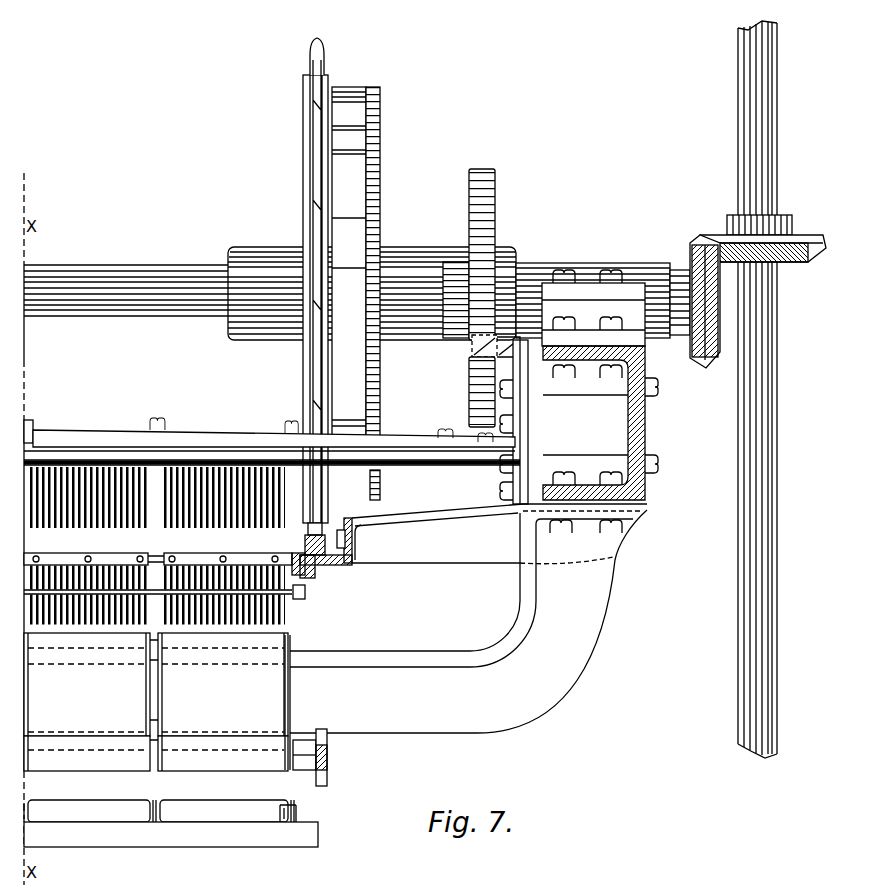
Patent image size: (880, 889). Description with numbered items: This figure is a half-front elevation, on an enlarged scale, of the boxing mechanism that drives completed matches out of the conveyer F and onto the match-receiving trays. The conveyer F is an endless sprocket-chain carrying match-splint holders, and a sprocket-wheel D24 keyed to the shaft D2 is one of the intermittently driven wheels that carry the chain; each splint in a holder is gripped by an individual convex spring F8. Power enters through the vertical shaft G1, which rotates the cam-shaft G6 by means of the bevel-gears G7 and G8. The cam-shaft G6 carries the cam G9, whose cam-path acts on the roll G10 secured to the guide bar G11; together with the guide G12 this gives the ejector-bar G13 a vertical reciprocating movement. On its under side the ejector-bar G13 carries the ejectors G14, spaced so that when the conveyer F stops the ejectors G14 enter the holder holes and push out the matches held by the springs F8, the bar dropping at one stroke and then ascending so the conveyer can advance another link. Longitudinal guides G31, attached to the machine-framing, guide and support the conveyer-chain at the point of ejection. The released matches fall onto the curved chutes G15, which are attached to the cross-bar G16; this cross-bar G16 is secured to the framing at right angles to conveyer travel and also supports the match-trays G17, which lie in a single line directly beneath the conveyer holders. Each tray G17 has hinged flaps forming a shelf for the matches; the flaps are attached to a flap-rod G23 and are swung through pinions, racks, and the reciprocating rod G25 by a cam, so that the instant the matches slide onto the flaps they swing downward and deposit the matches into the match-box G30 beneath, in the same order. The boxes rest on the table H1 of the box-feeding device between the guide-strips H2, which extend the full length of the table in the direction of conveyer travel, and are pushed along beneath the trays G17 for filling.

The shaft D2 is at (106, 266).
The sprocket-wheel D24 is at (318, 42).
The vertical shaft G1 is at (780, 372).
The cam-shaft G6 is at (121, 304).
The bevel-gear G7 is at (792, 222).
The bevel-gear G8 is at (702, 363).
The cam G9 is at (496, 178).
The roll G10 is at (470, 358).
The guide bar G11 is at (470, 380).
The guide G12 is at (500, 491).
The ejector-bar G13 is at (192, 438).
The ejector G14 is at (244, 527).
The convex spring F8 is at (190, 565).
The conveyer F is at (306, 596).
The curved chute G15 is at (156, 686).
The cross-bar G16 is at (557, 695).
The match-tray G17 is at (242, 767).
The flap-rod G23 is at (312, 762).
The reciprocating rod G25 is at (330, 763).
The match-box G30 is at (127, 813).
The longitudinal guide G31 is at (352, 562).
The table H1 is at (290, 843).
The guide-strip H2 is at (300, 811).